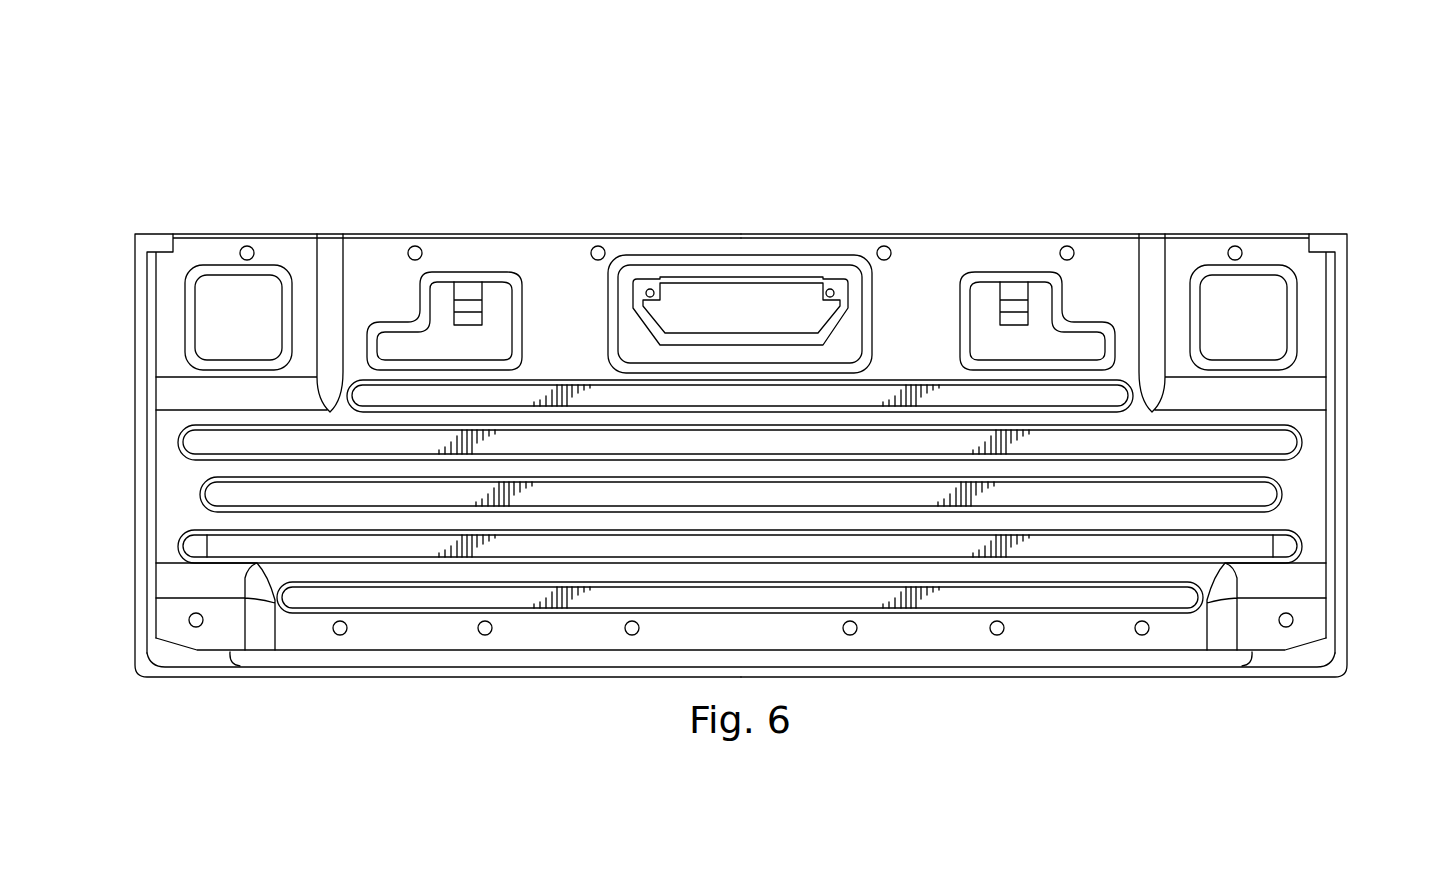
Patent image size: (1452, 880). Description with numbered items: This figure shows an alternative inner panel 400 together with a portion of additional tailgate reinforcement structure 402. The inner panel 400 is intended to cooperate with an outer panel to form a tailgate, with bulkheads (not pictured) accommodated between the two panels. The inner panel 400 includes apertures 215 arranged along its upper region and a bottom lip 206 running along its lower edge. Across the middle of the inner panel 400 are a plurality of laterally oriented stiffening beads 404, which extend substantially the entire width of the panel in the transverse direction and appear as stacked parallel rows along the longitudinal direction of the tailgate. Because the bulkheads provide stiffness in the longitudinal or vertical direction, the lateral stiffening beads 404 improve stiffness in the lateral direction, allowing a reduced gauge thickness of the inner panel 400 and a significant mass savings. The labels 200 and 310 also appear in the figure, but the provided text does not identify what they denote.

The electronic device 200 is at (341, 97).
The inner panel 400 is at (1211, 179).
The tailgate reinforcement structure 402 is at (1351, 543).
The bottom lip 206 is at (478, 677).
The apertures 215 is at (226, 298).
The connector recess 310 is at (488, 352).
The stiffening beads 404 is at (204, 443).